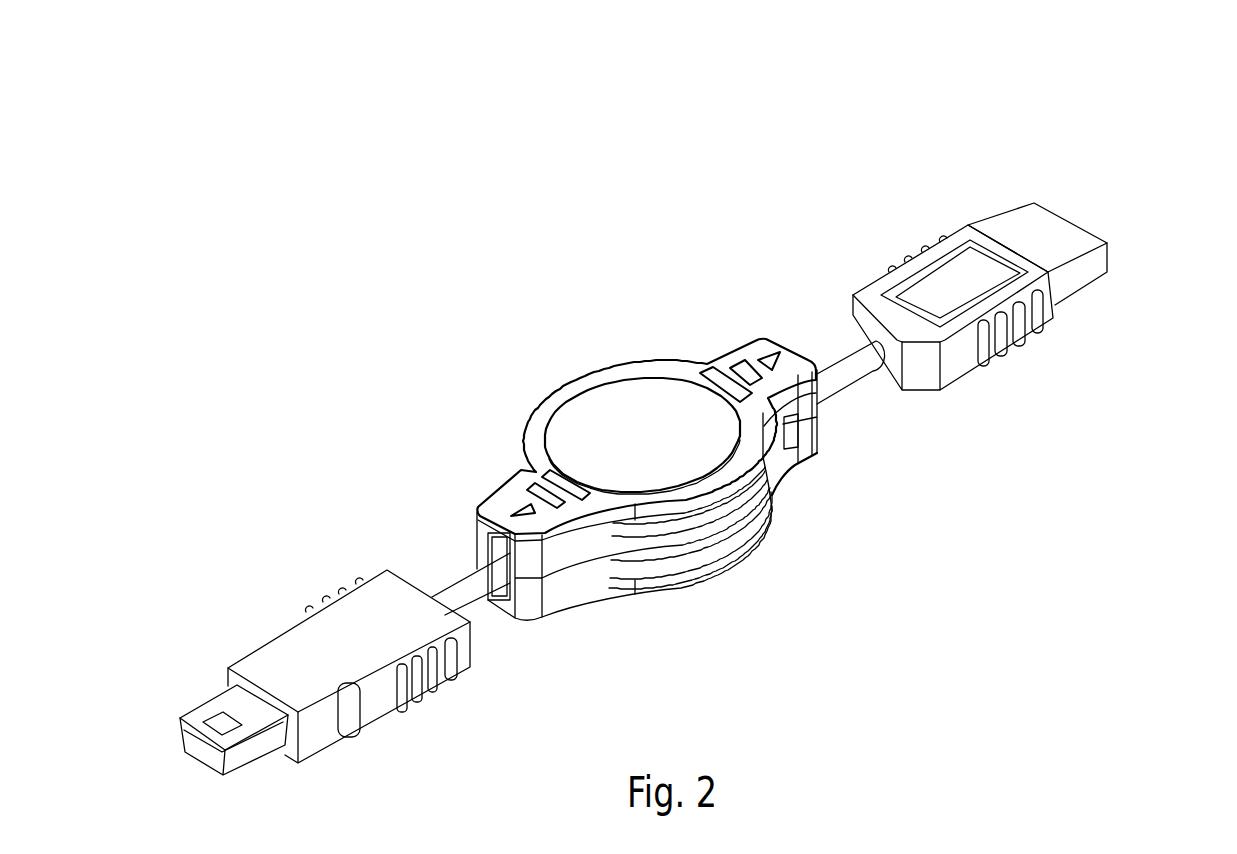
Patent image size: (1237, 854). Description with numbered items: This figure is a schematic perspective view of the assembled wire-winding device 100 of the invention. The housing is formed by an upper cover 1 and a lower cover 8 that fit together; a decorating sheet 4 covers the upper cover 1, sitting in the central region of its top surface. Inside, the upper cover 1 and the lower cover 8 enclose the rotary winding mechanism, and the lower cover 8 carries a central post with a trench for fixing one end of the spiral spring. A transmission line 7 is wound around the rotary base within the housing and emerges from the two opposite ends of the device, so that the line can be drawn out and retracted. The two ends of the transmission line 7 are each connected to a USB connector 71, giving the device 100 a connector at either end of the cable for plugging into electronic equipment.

The wire-winding device 100 is at (700, 117).
The upper cover 1 is at (557, 391).
The decorating sheet 4 is at (659, 400).
The lower cover 8 is at (702, 587).
The transmission line 7 is at (846, 396).
The USB connectors 71 is at (270, 672).